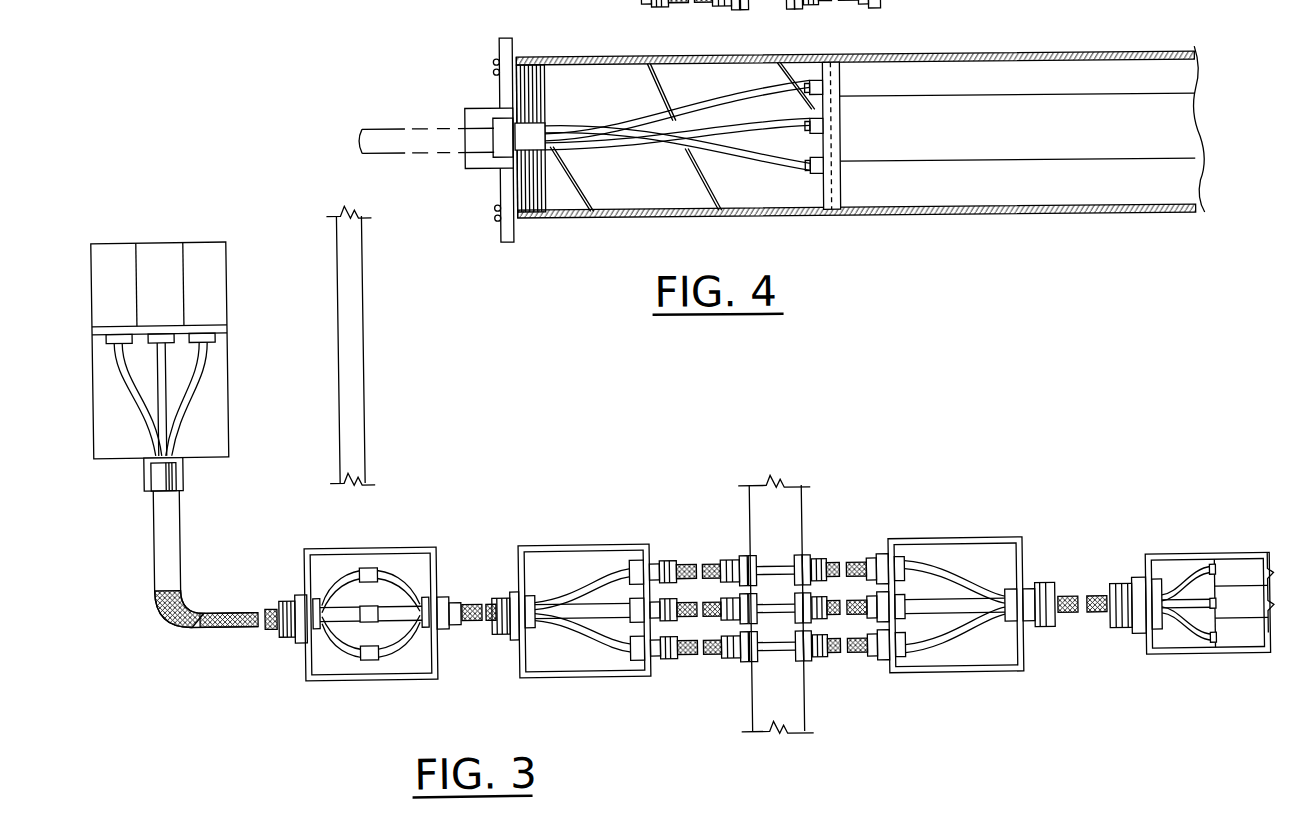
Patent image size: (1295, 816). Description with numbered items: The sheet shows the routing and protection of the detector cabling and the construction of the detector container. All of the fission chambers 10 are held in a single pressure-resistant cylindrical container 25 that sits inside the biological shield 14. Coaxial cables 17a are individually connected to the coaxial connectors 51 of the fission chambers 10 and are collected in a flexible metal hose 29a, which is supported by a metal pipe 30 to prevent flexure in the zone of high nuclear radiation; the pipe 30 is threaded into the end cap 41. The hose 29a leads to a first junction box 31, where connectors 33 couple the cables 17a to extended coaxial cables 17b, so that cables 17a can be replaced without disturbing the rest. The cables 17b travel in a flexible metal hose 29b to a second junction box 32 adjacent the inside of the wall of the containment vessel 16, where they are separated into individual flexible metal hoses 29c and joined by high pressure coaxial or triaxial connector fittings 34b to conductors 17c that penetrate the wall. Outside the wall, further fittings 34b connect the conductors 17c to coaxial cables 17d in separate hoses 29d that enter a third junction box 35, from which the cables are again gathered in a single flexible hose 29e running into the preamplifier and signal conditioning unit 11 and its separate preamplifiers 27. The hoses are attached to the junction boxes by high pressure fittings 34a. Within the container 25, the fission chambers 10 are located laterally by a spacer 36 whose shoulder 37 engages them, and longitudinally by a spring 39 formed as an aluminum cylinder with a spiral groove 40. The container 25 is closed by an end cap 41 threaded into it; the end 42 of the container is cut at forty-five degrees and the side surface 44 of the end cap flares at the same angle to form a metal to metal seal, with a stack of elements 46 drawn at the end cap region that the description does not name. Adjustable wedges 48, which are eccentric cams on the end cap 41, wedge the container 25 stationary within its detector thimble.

In FIG. 4, the fission chambers 10 is at (958, 175).
In FIG. 3, the fission chambers 10 is at (170, 250).
In FIG. 3, the preamplifier and signal conditioning unit 11 is at (1214, 664).
In FIG. 3, the biological shield 14 is at (342, 324).
In FIG. 3, the containment vessel 16 is at (750, 724).
In FIG. 4, the coaxial cables 17a is at (628, 128).
In FIG. 3, the extended coaxial cables 17b is at (398, 578).
In FIG. 3, the conductors 17c is at (782, 572).
In FIG. 3, the coaxial cables 17d is at (948, 576).
In FIG. 4, the container 25 is at (954, 216).
In FIG. 3, the container 25 is at (254, 278).
In FIG. 3, the preamplifiers 27 is at (1244, 586).
In FIG. 4, the flexible metal hose 29a is at (412, 150).
In FIG. 3, the flexible metal hose 29a is at (268, 599).
In FIG. 3, the flexible metal hose 29b is at (466, 598).
In FIG. 3, the flexible metal hoses 29c is at (718, 568).
In FIG. 3, the flexible metal hoses 29d is at (844, 566).
In FIG. 3, the flexible hose 29e is at (1096, 570).
In FIG. 3, the metal pipe 30 is at (156, 550).
In FIG. 3, the first junction box 31 is at (370, 664).
In FIG. 3, the second junction box 32 is at (609, 674).
In FIG. 3, the connectors 33 is at (390, 622).
In FIG. 3, the fittings 34a is at (300, 636).
In FIG. 3, the high pressure coaxial or triaxial connector fittings 34b is at (668, 662).
In FIG. 3, the third junction box 35 is at (974, 674).
In FIG. 4, the spacer 36 is at (826, 66).
In FIG. 4, the shoulder 37 is at (835, 86).
In FIG. 4, the spring 39 is at (724, 76).
In FIG. 4, the spiral groove 40 is at (651, 68).
In FIG. 4, the end cap 41 is at (512, 90).
In FIG. 4, the end 42 is at (508, 180).
In FIG. 4, the side surface 44 is at (520, 220).
In FIG. 4, the seal rings 46 is at (536, 66).
In FIG. 4, the adjustable wedges 48 is at (496, 56).
In FIG. 3, the coaxial connectors 51 is at (158, 388).